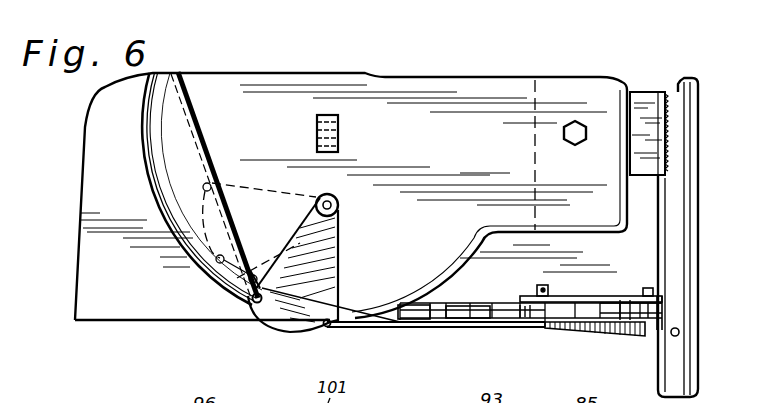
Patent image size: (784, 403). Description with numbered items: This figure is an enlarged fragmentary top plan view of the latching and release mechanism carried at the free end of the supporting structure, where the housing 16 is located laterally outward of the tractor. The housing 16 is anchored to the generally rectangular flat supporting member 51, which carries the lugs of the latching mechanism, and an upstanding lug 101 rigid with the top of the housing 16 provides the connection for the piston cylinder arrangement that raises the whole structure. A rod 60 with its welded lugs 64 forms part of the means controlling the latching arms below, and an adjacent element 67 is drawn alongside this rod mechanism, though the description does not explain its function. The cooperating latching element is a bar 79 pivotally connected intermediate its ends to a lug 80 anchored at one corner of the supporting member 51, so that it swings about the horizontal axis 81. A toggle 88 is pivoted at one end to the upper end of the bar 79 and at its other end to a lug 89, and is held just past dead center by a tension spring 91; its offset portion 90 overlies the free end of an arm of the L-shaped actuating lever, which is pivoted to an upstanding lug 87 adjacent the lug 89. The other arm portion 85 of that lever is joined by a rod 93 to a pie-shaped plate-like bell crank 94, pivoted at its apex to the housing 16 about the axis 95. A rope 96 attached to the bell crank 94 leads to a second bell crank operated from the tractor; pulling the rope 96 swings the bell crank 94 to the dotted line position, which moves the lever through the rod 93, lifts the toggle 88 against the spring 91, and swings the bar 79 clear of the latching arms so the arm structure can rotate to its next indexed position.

The housing 16 is at (412, 141).
The flat supporting member 51 is at (164, 313).
The rod 60 is at (680, 223).
The lug 64 is at (652, 140).
The rack 67 is at (612, 330).
The cooperating latching element 79 is at (663, 307).
The lug 80 is at (660, 292).
The horizontal axis 81 is at (646, 288).
The arm portion 85 is at (503, 317).
The upstanding lug 87 is at (447, 330).
The toggle 88 is at (500, 300).
The lug 89 is at (397, 323).
The offset portion 90 is at (557, 322).
The tension spring 91 is at (548, 289).
The rod 93 is at (364, 328).
The bell crank 94 is at (262, 193).
The axis 95 is at (338, 207).
The rope 96 is at (213, 158).
The upstanding lug 101 is at (317, 124).